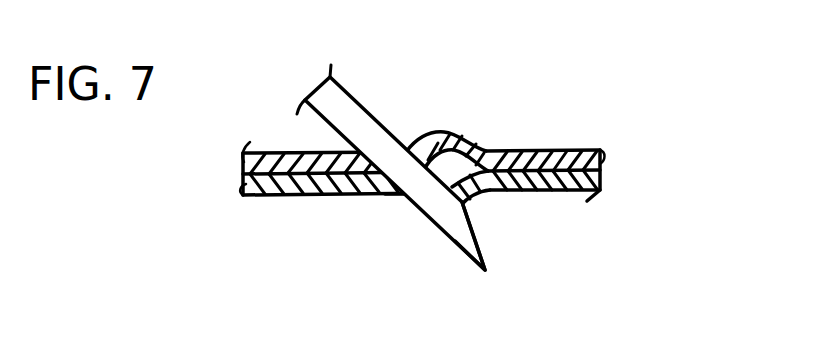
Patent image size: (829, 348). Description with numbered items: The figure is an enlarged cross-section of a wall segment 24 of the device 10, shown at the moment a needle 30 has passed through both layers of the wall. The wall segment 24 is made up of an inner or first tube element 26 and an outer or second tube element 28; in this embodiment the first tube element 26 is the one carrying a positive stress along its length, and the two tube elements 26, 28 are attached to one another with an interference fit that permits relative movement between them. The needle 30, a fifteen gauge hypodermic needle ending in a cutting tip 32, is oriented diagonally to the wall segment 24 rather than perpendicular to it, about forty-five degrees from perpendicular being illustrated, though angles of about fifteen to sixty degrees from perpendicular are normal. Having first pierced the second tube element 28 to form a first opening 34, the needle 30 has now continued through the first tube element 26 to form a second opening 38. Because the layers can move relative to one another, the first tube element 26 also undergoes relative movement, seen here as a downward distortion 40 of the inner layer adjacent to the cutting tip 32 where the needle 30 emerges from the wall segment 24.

The device 10 is at (426, 142).
The wall segment 24 is at (390, 142).
The first tube element 26 is at (450, 227).
The second tube element 28 is at (428, 87).
The needle 30 is at (419, 185).
The cutting tip 32 is at (485, 243).
The first opening 34 is at (438, 131).
The second opening 38 is at (402, 195).
The downward distortion 40 is at (467, 203).